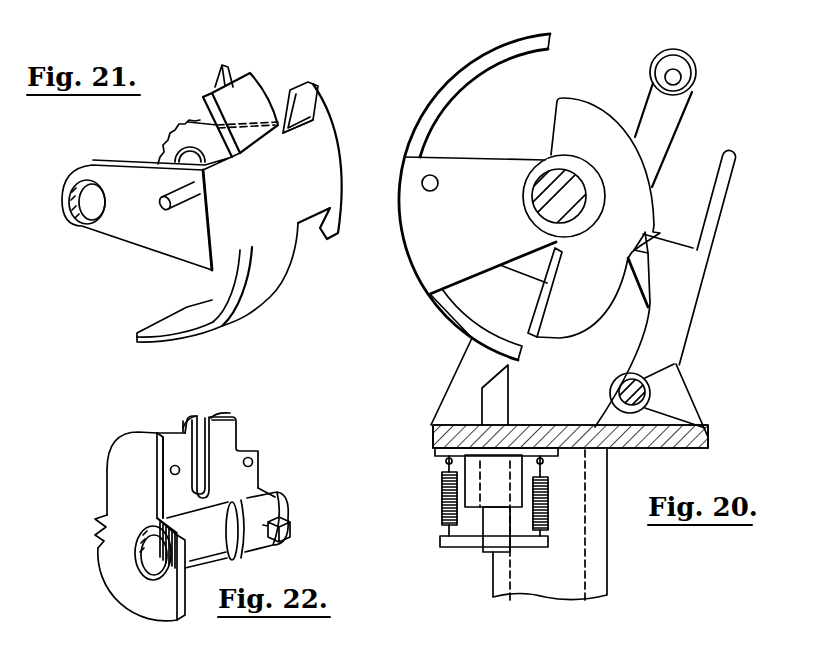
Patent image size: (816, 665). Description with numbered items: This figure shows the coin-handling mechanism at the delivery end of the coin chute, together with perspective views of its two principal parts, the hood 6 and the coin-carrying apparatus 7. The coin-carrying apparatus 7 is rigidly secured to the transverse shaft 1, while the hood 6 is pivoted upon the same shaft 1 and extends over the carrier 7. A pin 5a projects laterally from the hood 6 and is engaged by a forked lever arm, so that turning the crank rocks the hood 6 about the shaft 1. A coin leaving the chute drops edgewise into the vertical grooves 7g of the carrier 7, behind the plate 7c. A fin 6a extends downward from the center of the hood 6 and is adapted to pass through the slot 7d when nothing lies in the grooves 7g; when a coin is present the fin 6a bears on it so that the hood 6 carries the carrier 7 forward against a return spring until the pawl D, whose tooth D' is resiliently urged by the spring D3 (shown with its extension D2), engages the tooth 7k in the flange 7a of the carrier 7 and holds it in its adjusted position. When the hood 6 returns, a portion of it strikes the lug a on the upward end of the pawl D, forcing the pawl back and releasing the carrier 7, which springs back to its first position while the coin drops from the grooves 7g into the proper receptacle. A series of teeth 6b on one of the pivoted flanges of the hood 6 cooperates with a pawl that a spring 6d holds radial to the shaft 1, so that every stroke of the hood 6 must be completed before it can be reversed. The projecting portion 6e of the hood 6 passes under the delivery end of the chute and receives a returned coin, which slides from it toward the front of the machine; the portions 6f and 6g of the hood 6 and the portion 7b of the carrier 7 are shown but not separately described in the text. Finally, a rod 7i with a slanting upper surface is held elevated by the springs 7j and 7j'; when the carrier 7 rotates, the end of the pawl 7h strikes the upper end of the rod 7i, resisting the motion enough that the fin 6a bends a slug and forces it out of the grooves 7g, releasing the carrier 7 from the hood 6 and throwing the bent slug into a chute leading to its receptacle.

In FIG. 20, the shaft 1 is at (569, 199).
In FIG. 20, the pin 5a is at (438, 183).
In FIG. 21, the pin 5a is at (161, 196).
In FIG. 20, the hood 6 is at (402, 182).
In FIG. 21, the hood 6 is at (292, 80).
In FIG. 20, the fin 6a is at (479, 328).
In FIG. 21, the fin 6a is at (210, 79).
In FIG. 21, the teeth 6b is at (179, 138).
In FIG. 21, the spring 6d is at (218, 165).
In FIG. 21, the projecting portion 6e is at (247, 112).
In FIG. 21, the flange 6f is at (224, 292).
In FIG. 21, the notch 6g is at (299, 136).
In FIG. 20, the coin-carrying apparatus 7 is at (598, 218).
In FIG. 22, the coin-carrying apparatus 7 is at (223, 530).
In FIG. 20, the flange 7a is at (582, 260).
In FIG. 22, the flange 7a is at (107, 468).
In FIG. 22, the slot 7b is at (200, 414).
In FIG. 22, the plate 7c is at (240, 438).
In FIG. 22, the slot 7d is at (244, 481).
In FIG. 22, the vertical grooves 7g is at (160, 432).
In FIG. 20, the pawl 7h is at (670, 107).
In FIG. 20, the rod 7i is at (508, 398).
In FIG. 20, the spring 7j is at (553, 496).
In FIG. 20, the spring 7j' is at (478, 501).
In FIG. 20, the tooth 7k is at (641, 244).
In FIG. 22, the tooth 7k is at (92, 530).
In FIG. 20, the lever a is at (718, 210).
In FIG. 20, the pawl D is at (684, 374).
In FIG. 20, the tooth D' is at (644, 329).
In FIG. 20, the spring arm D2 is at (683, 367).
In FIG. 20, the spring D3 is at (621, 385).